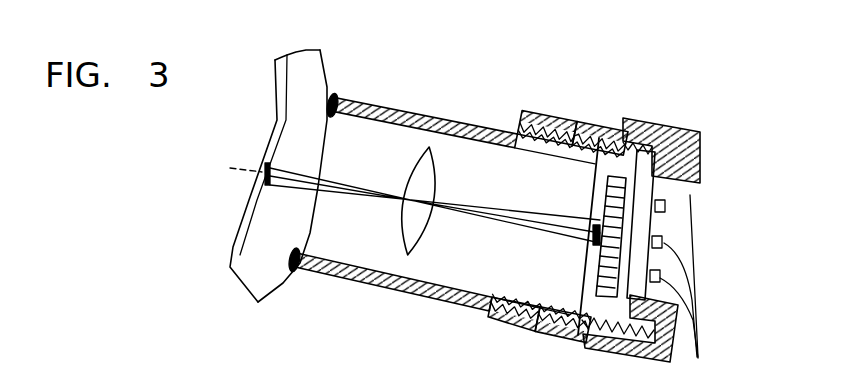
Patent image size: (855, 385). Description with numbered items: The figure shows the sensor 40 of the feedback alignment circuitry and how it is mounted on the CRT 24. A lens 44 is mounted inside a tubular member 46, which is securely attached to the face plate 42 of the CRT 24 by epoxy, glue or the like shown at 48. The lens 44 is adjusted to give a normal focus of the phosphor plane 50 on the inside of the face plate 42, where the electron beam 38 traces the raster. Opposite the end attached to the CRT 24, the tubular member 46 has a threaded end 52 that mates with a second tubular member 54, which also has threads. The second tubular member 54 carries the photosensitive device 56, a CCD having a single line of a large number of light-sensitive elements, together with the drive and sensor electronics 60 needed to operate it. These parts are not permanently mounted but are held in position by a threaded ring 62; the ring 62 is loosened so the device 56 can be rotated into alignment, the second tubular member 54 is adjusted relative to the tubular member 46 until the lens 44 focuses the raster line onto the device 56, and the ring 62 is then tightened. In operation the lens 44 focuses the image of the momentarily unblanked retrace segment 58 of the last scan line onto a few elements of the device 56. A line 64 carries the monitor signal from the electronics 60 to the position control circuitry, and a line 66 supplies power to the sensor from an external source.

The CRT 24 is at (318, 40).
The electron beam 38 is at (238, 167).
The sensor 40 is at (522, 70).
The face plate 42 is at (328, 68).
The lens 44 is at (430, 160).
The tubular member 46 is at (378, 280).
The epoxy 48 is at (340, 96).
The phosphor plane 50 is at (234, 252).
The threaded end 52 is at (532, 113).
The second tubular member 54 is at (570, 115).
The photosensitive device 56 is at (658, 188).
The retrace segment 58 is at (260, 182).
The drive and sensor electronics 60 is at (636, 226).
The threaded ring 62 is at (668, 122).
The line 64 is at (692, 257).
The line 66 is at (686, 287).